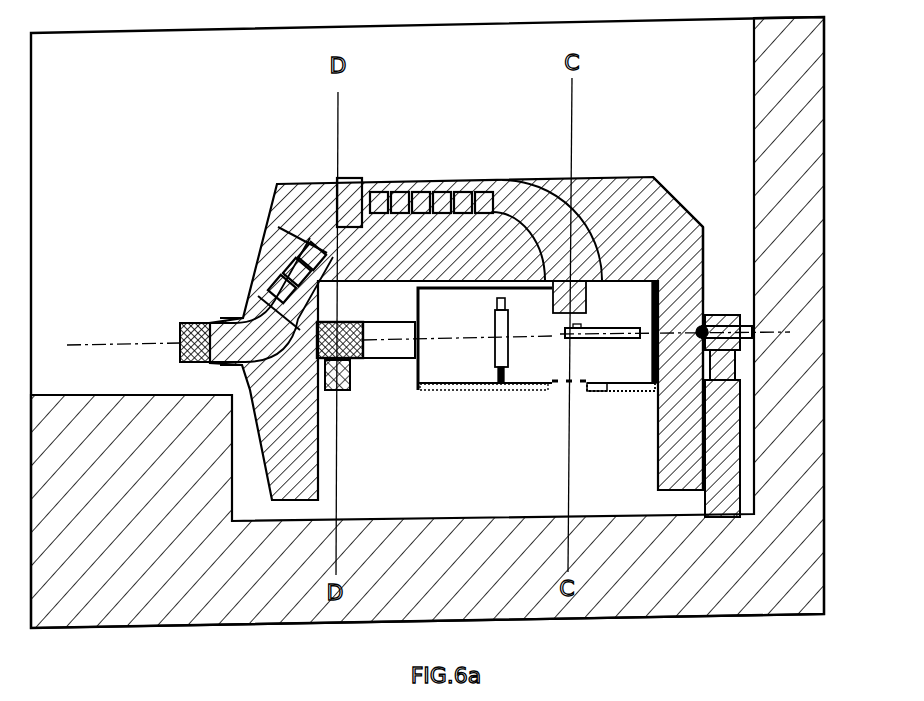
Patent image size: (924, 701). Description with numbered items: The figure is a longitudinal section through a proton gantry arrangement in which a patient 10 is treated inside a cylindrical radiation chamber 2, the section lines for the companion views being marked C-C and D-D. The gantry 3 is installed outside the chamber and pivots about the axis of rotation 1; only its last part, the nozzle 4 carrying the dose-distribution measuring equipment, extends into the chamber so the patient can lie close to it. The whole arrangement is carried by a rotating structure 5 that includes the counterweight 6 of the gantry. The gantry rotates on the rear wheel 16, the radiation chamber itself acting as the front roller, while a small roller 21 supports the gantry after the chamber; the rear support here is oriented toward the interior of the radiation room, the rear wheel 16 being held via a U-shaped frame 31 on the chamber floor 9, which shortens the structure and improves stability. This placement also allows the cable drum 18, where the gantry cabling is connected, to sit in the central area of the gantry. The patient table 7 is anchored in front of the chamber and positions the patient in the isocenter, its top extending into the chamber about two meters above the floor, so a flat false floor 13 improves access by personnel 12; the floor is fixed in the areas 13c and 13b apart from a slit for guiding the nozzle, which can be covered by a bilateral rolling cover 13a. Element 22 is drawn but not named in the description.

The axis of rotation 1 is at (429, 341).
The radiation chamber 2 is at (527, 366).
The gantry 3 is at (503, 176).
The nozzle 4 is at (683, 205).
The rotating structure 5 is at (382, 180).
The counterweight 6 is at (603, 178).
The patient table 7 is at (705, 292).
The chamber floor 9 is at (432, 519).
The patient 10 is at (593, 340).
The personnel 12 is at (497, 350).
The false floor 13 is at (632, 393).
The bilateral rolling cover 13a is at (565, 388).
The fixed floor area 13b is at (597, 392).
The fixed floor area 13c is at (517, 391).
The rear wheel 16 is at (350, 322).
The cable drum 18 is at (385, 343).
The small roller 21 is at (722, 313).
The support 22 is at (740, 350).
The U-shaped frame 31 is at (350, 390).